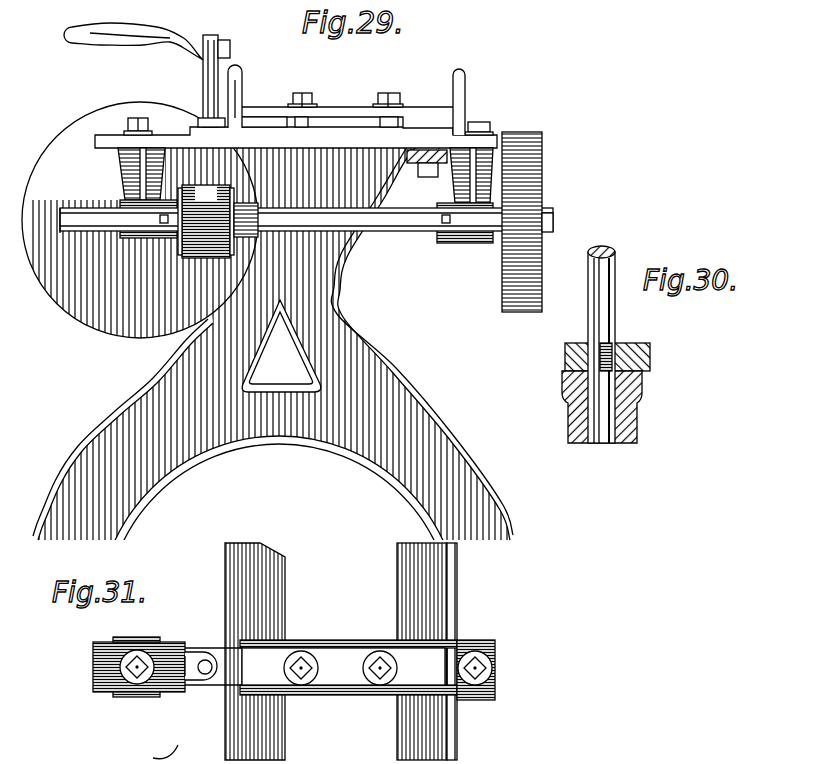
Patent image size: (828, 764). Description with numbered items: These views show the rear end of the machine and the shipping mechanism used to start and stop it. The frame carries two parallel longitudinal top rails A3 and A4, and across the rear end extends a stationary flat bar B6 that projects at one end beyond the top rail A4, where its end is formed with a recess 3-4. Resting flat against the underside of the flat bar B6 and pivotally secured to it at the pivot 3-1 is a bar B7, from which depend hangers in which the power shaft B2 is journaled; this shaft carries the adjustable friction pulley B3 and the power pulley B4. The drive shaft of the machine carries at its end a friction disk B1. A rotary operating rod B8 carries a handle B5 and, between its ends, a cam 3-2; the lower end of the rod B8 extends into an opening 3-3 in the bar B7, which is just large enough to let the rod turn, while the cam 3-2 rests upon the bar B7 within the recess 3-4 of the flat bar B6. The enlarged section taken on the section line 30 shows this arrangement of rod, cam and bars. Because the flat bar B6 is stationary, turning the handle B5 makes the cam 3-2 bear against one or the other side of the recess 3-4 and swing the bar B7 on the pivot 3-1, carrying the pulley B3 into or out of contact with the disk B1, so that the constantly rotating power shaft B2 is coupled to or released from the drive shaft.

In FIG. 29, the handle B5 is at (130, 37).
In FIG. 29, the rotary operating rod B8 is at (205, 82).
In FIG. 30, the rotary operating rod B8 is at (598, 313).
In FIG. 29, the top rail A4 is at (230, 112).
In FIG. 31, the top rail A4 is at (242, 613).
In FIG. 29, the cam 3-2 is at (220, 118).
In FIG. 30, the cam 3-2 is at (607, 357).
In FIG. 29, the bar B7 is at (325, 147).
In FIG. 30, the bar B7 is at (637, 395).
In FIG. 31, the bar B7 is at (107, 690).
In FIG. 29, the flat bar B6 is at (360, 132).
In FIG. 30, the flat bar B6 is at (650, 357).
In FIG. 31, the flat bar B6 is at (217, 687).
In FIG. 29, the top rail A3 is at (460, 92).
In FIG. 31, the top rail A3 is at (440, 607).
In FIG. 29, the power pulley B4 is at (530, 192).
In FIG. 29, the pivot 3-1 is at (415, 166).
In FIG. 29, the power shaft B2 is at (392, 232).
In FIG. 29, the friction disk B1 is at (112, 247).
In FIG. 29, the adjustable friction pulley B3 is at (205, 240).
In FIG. 29, the section line 30 is at (204, 214).
In FIG. 31, the opening 3-3 is at (205, 655).
In FIG. 31, the recess 3-4 is at (197, 683).